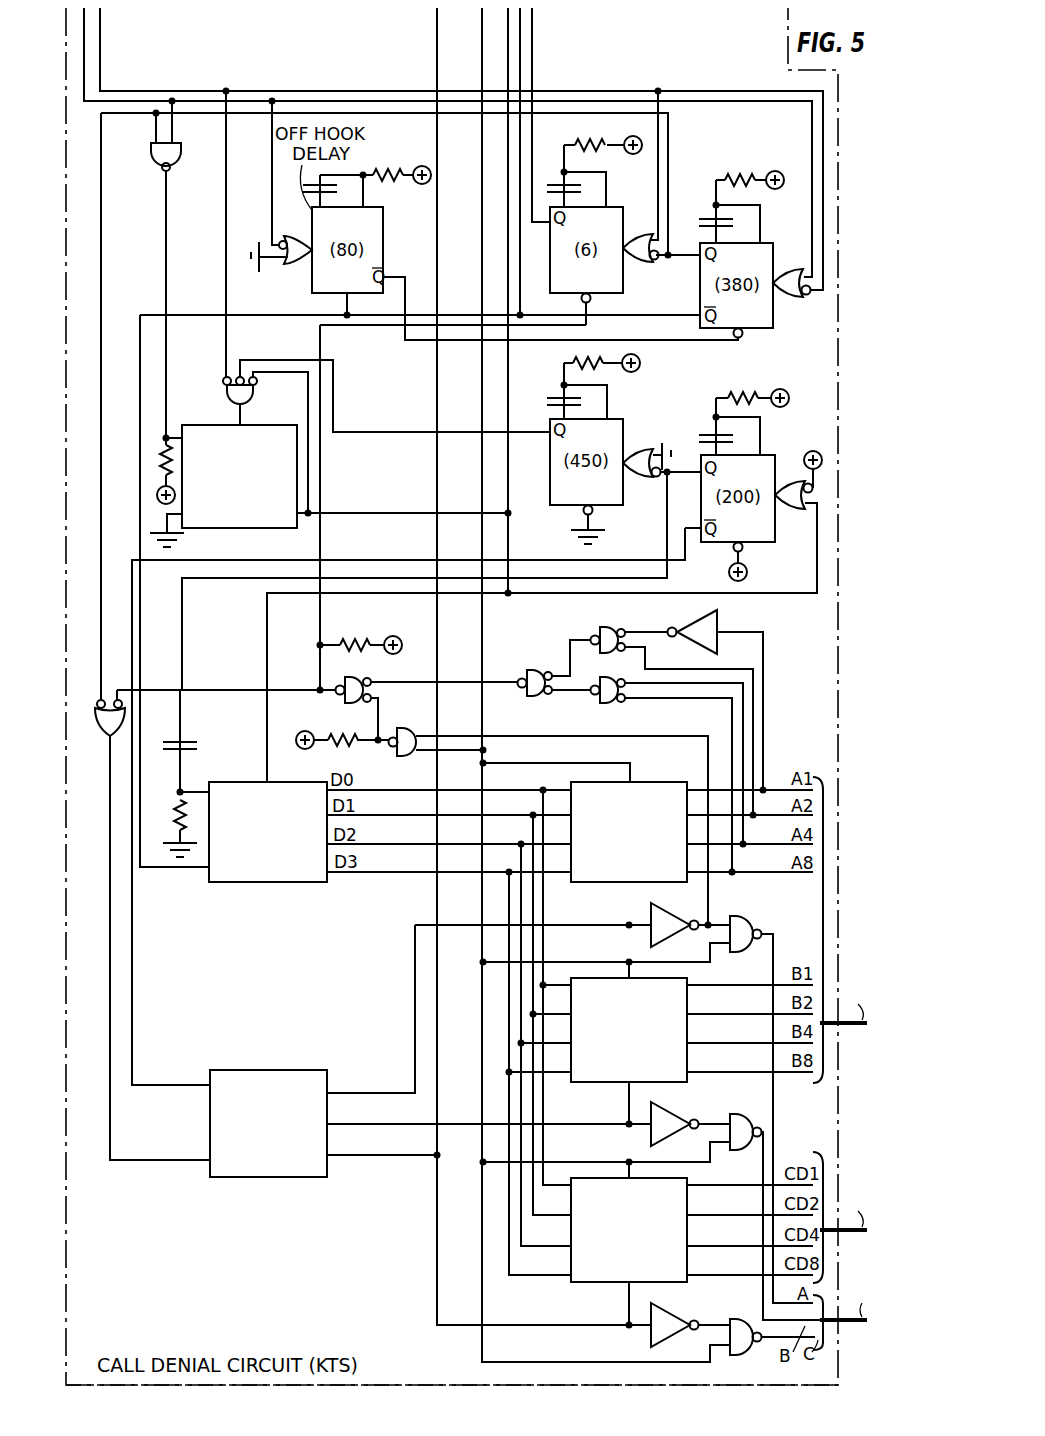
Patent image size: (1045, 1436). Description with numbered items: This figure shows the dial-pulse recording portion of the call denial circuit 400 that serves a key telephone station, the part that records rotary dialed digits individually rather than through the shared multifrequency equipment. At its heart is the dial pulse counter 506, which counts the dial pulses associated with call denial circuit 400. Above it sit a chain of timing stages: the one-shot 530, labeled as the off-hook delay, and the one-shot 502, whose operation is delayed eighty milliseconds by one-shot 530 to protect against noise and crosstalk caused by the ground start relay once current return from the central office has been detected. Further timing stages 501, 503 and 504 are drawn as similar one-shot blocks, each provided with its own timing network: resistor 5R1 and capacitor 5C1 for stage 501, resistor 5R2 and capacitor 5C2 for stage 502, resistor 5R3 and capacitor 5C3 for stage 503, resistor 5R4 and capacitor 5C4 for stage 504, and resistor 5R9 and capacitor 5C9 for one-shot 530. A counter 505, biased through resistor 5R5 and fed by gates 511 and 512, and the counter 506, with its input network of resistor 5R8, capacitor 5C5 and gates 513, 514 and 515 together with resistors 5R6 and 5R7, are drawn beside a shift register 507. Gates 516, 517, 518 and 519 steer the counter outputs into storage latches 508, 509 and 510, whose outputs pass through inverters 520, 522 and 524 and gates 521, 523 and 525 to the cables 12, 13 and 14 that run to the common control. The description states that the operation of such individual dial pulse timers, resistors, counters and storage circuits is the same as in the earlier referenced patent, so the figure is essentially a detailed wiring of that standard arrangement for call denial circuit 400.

The call denial circuit 400 is at (578, 1385).
The timer flip-flop with NOR gate 501 is at (623, 292).
The one-shot 502 is at (775, 244).
The timer flip-flop with NOR gate 503 is at (610, 505).
The timer flip-flop with NOR gate 504 is at (762, 542).
The decade counter MC7490P 505 is at (263, 532).
The dial pulse counter 506 is at (284, 885).
The shift register MC7496P 507 is at (283, 1179).
The latch MC4035P 508 is at (606, 885).
The latch MC4035P 509 is at (596, 1085).
The latch MC4035P 510 is at (605, 1283).
The NAND gate 511 is at (151, 144).
The three-input NAND gate 512 is at (222, 393).
The NOR gate 513 is at (97, 730).
The NAND gate 514 is at (358, 676).
The NAND gate 515 is at (397, 758).
The inverter 516 is at (722, 615).
The NAND gate 517 is at (608, 627).
The NAND gate 518 is at (605, 706).
The NAND gate 519 is at (539, 668).
The inverter 520 is at (655, 905).
The NAND gate 521 is at (750, 912).
The inverter 522 is at (664, 1120).
The NAND gate 523 is at (750, 1112).
The inverter 524 is at (668, 1320).
The NAND gate 525 is at (741, 1328).
The one-shot 530 is at (384, 235).
The resistor 5R1 is at (585, 142).
The resistor 5R2 is at (743, 172).
The resistor 5R3 is at (601, 381).
The resistor 5R4 is at (746, 390).
The resistor 5R5 is at (156, 462).
The resistor 5R6 is at (340, 640).
The resistor 5R7 is at (337, 731).
The resistor 5R8 is at (172, 816).
The resistor 5R9 is at (375, 175).
The capacitor 5C1 is at (584, 188).
The capacitor 5C2 is at (703, 226).
The capacitor 5C3 is at (548, 400).
The capacitor 5C4 is at (703, 437).
The capacitor 5C5 is at (197, 746).
The capacitor 5C9 is at (336, 190).
The cable to common control 12 is at (842, 930).
The cable to common control 13 is at (842, 1182).
The cable to common control 14 is at (843, 1342).